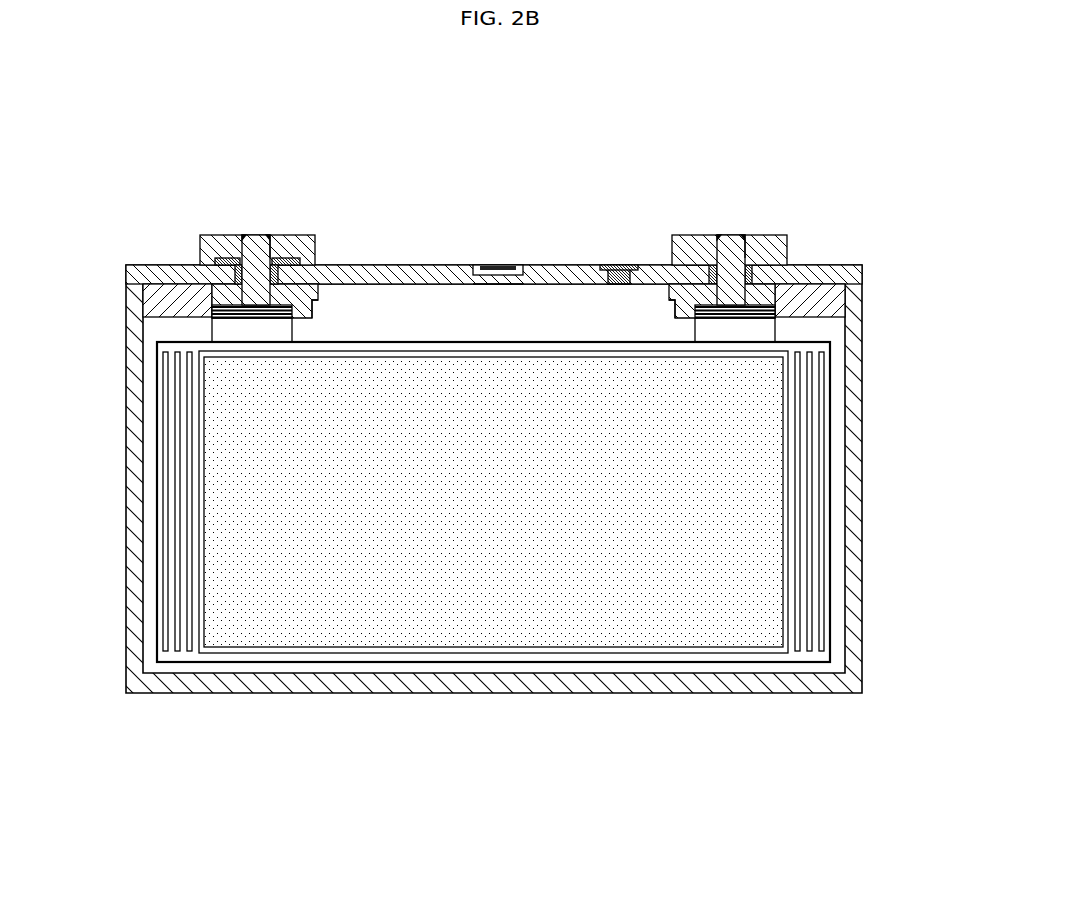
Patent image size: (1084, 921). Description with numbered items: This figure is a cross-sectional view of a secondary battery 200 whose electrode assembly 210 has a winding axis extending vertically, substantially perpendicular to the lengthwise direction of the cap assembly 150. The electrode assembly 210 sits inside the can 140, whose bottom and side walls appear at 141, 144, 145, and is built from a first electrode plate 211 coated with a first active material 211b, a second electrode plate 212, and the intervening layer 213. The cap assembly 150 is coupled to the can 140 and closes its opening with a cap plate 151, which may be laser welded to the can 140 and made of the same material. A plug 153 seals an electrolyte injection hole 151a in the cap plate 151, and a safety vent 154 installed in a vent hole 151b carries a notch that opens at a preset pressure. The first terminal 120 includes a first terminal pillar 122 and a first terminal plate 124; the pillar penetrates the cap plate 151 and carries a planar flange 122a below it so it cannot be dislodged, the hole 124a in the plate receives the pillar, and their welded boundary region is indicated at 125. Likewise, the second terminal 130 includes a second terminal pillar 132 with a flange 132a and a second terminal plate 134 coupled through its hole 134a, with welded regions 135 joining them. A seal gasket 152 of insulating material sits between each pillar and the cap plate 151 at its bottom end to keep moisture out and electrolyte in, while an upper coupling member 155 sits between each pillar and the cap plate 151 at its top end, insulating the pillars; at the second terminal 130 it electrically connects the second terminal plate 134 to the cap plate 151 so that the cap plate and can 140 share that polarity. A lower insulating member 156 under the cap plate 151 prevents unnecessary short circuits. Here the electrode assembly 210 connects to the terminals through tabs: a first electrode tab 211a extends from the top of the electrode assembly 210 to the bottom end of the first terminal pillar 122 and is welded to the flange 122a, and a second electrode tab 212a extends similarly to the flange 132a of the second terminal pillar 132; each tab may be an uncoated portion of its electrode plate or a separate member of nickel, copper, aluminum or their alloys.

The secondary battery 200 is at (894, 103).
The first terminal 120 is at (348, 165).
The first terminal pillar 122 is at (323, 263).
The flange 122a is at (318, 302).
The first terminal plate 124 is at (231, 235).
The hole in first terminal plate 124a is at (262, 250).
The welded regions 125 is at (272, 233).
The second terminal 130 is at (823, 165).
The second terminal pillar 132 is at (795, 262).
The flange 132a is at (675, 302).
The second terminal plate 134 is at (705, 235).
The hole 134a is at (742, 250).
The welded regions 135 is at (743, 233).
The can 140 is at (877, 455).
The bottom wall of case 141 is at (250, 694).
The right side wall of case 144 is at (855, 531).
The left side wall of case 145 is at (132, 531).
The cap assembly 150 is at (577, 173).
The cap plate 151 is at (565, 265).
The electrolyte injection hole 151a is at (615, 285).
The vent hole 151b is at (497, 280).
The seal gasket 152 is at (235, 278).
The plug 153 is at (617, 265).
The safety vent 154 is at (500, 265).
The upper coupling member 155 is at (235, 258).
The lower insulating member 156 is at (158, 300).
The electrode assembly 210 is at (591, 674).
The first electrode plate 211 is at (196, 373).
The first electrode tab 211a is at (250, 330).
The first active material 211b is at (383, 630).
The second electrode plate 212 is at (798, 373).
The second electrode tab 212a is at (735, 330).
The separator 213 is at (455, 655).